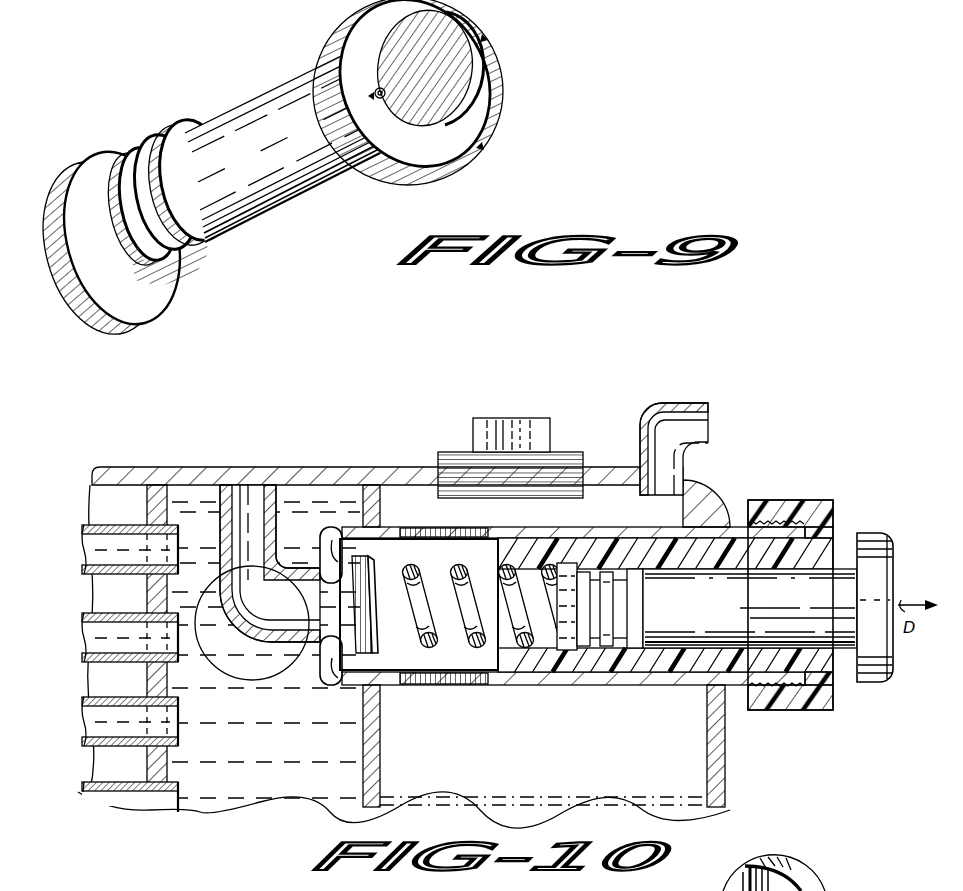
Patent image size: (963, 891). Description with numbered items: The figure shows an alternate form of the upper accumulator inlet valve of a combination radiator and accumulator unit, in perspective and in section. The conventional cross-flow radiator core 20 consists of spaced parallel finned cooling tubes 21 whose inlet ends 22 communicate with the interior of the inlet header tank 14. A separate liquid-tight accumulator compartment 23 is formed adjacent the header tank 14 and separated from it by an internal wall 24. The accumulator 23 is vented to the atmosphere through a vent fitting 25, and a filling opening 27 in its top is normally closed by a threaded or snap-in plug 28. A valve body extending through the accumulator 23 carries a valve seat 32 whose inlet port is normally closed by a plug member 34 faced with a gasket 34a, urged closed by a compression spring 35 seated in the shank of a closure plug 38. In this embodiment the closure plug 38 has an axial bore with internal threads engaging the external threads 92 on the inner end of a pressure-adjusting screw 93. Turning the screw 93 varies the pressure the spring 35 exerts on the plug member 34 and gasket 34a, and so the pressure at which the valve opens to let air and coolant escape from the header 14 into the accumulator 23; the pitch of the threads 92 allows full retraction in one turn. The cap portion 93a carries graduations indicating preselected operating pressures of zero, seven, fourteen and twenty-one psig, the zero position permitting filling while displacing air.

In FIG. 10, the inlet header tank 14 is at (262, 790).
In FIG. 10, the cross-flow radiator core 20 is at (118, 815).
In FIG. 10, the finned cooling tubes 21 is at (131, 648).
In FIG. 10, the inlet ends 22 is at (180, 725).
In FIG. 10, the accumulator compartment 23 is at (558, 761).
In FIG. 10, the internal wall 24 is at (383, 768).
In FIG. 10, the vent fitting 25 is at (708, 402).
In FIG. 10, the filling opening 27 is at (585, 470).
In FIG. 10, the plug 28 is at (579, 450).
In FIG. 10, the valve seat 32 is at (356, 555).
In FIG. 10, the plug member 34 is at (352, 672).
In FIG. 10, the gasket 34a is at (328, 666).
In FIG. 10, the compression spring 35 is at (432, 648).
In FIG. 10, the closure plug 38 is at (700, 668).
In FIG. 9, the external threads 92 is at (226, 246).
In FIG. 9, the pressure-adjusting screw 93 is at (296, 204).
In FIG. 10, the pressure-adjusting screw 93 is at (845, 578).
In FIG. 9, the cap portion 93a is at (498, 116).
In FIG. 10, the cap portion 93a is at (870, 690).